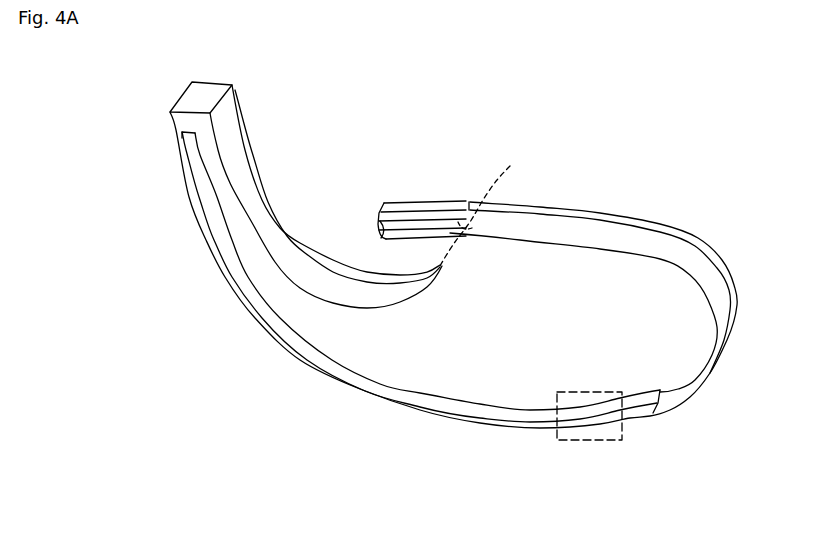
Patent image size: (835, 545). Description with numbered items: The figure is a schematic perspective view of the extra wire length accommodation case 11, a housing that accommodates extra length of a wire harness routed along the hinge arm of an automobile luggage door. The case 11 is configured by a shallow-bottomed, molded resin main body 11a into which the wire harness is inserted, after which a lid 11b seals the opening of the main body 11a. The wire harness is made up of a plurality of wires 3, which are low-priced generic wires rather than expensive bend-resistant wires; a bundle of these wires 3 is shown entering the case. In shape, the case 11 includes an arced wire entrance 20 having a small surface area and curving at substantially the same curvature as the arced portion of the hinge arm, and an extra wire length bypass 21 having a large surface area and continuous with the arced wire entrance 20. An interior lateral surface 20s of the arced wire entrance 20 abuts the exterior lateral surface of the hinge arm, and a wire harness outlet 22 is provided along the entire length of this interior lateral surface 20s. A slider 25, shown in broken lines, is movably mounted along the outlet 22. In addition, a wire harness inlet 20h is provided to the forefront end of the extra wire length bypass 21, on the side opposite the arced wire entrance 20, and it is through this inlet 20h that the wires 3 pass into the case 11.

The wire 3 is at (413, 202).
The extra wire length accommodation case 11 is at (154, 132).
The main body 11a is at (228, 140).
The lid 11b is at (247, 127).
The arced wire entrance 20 is at (327, 382).
The wire harness inlet 20h is at (494, 207).
The interior lateral surface 20s is at (288, 300).
The extra wire length bypass 21 is at (625, 298).
The wire harness outlet 22 is at (407, 400).
The slider 25 is at (623, 434).